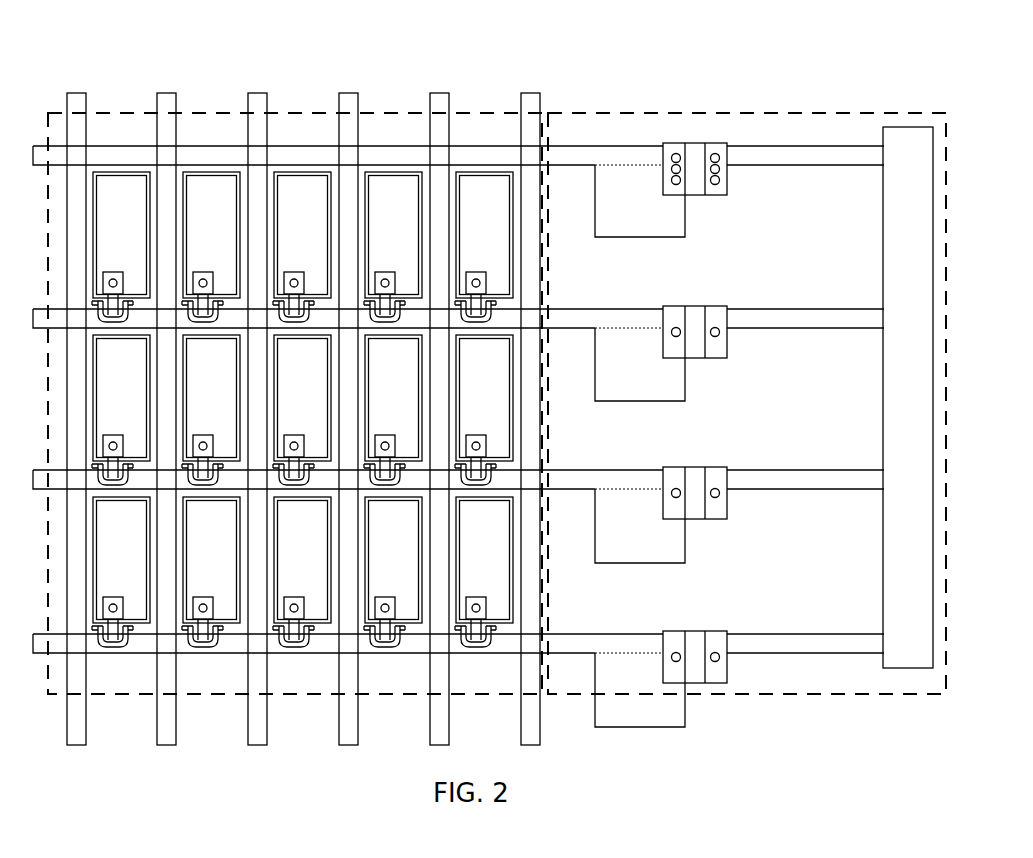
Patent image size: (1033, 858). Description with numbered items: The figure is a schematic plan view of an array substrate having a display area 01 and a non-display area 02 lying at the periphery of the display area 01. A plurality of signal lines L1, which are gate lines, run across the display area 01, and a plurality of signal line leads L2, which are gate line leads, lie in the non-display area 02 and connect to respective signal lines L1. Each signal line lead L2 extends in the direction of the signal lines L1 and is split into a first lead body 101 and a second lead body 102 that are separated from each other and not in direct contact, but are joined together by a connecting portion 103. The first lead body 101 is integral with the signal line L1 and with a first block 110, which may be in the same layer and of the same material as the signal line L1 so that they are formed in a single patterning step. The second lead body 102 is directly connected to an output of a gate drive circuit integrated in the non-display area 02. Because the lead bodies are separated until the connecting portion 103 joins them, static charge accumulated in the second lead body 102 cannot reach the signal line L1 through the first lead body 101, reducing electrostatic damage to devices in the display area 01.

The display area 01 is at (212, 110).
The non-display area 02 is at (842, 112).
The signal line L1 is at (385, 147).
The signal line lead L2 is at (732, 73).
The first lead body 101 is at (572, 155).
The first block 110 is at (633, 183).
The second lead body 102 is at (745, 157).
The connecting portion 103 is at (698, 197).